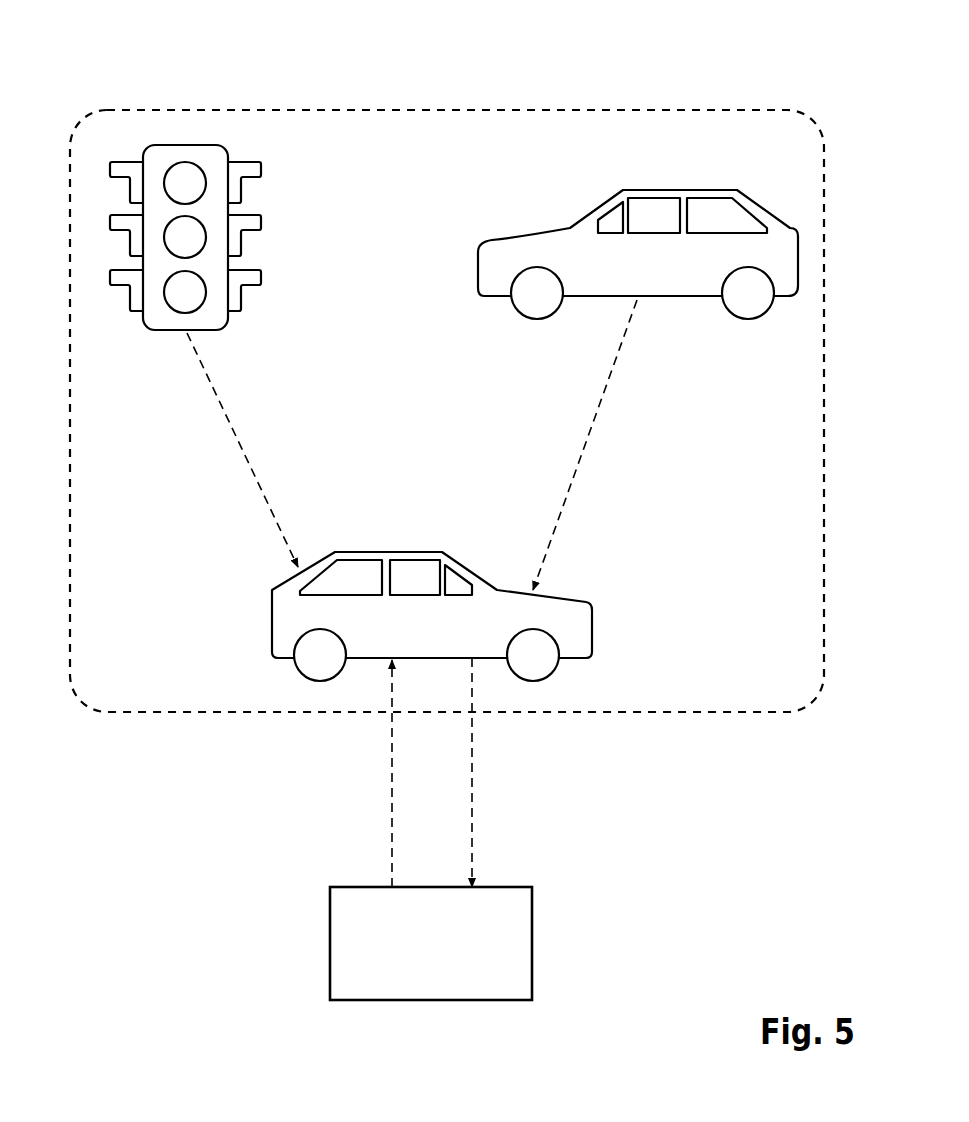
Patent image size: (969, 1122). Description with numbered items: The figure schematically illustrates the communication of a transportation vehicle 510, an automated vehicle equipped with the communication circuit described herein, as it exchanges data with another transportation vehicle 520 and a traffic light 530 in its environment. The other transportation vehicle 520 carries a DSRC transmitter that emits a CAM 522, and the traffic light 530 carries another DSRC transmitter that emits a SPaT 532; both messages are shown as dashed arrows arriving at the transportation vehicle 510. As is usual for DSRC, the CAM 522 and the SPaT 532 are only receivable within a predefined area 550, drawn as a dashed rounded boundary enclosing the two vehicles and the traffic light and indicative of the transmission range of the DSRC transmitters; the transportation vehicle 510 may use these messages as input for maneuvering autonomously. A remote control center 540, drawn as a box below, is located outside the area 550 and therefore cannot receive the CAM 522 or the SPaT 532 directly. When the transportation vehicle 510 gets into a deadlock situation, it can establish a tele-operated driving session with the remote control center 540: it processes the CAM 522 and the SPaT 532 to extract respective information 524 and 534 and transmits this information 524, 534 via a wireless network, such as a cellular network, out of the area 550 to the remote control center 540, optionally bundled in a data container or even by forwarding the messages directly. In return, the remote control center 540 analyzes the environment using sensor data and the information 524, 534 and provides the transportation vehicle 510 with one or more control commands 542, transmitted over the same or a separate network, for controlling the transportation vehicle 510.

The predefined area 550 is at (393, 110).
The traffic light 530 is at (261, 224).
The transportation vehicle 520 is at (530, 236).
The transportation vehicle 510 is at (272, 610).
The remote control center 540 is at (532, 943).
The SPaT message 532 is at (260, 480).
The CAM 522 is at (575, 470).
The control commands 542 is at (391, 810).
The information 524 is at (473, 815).
The information 534 is at (548, 772).